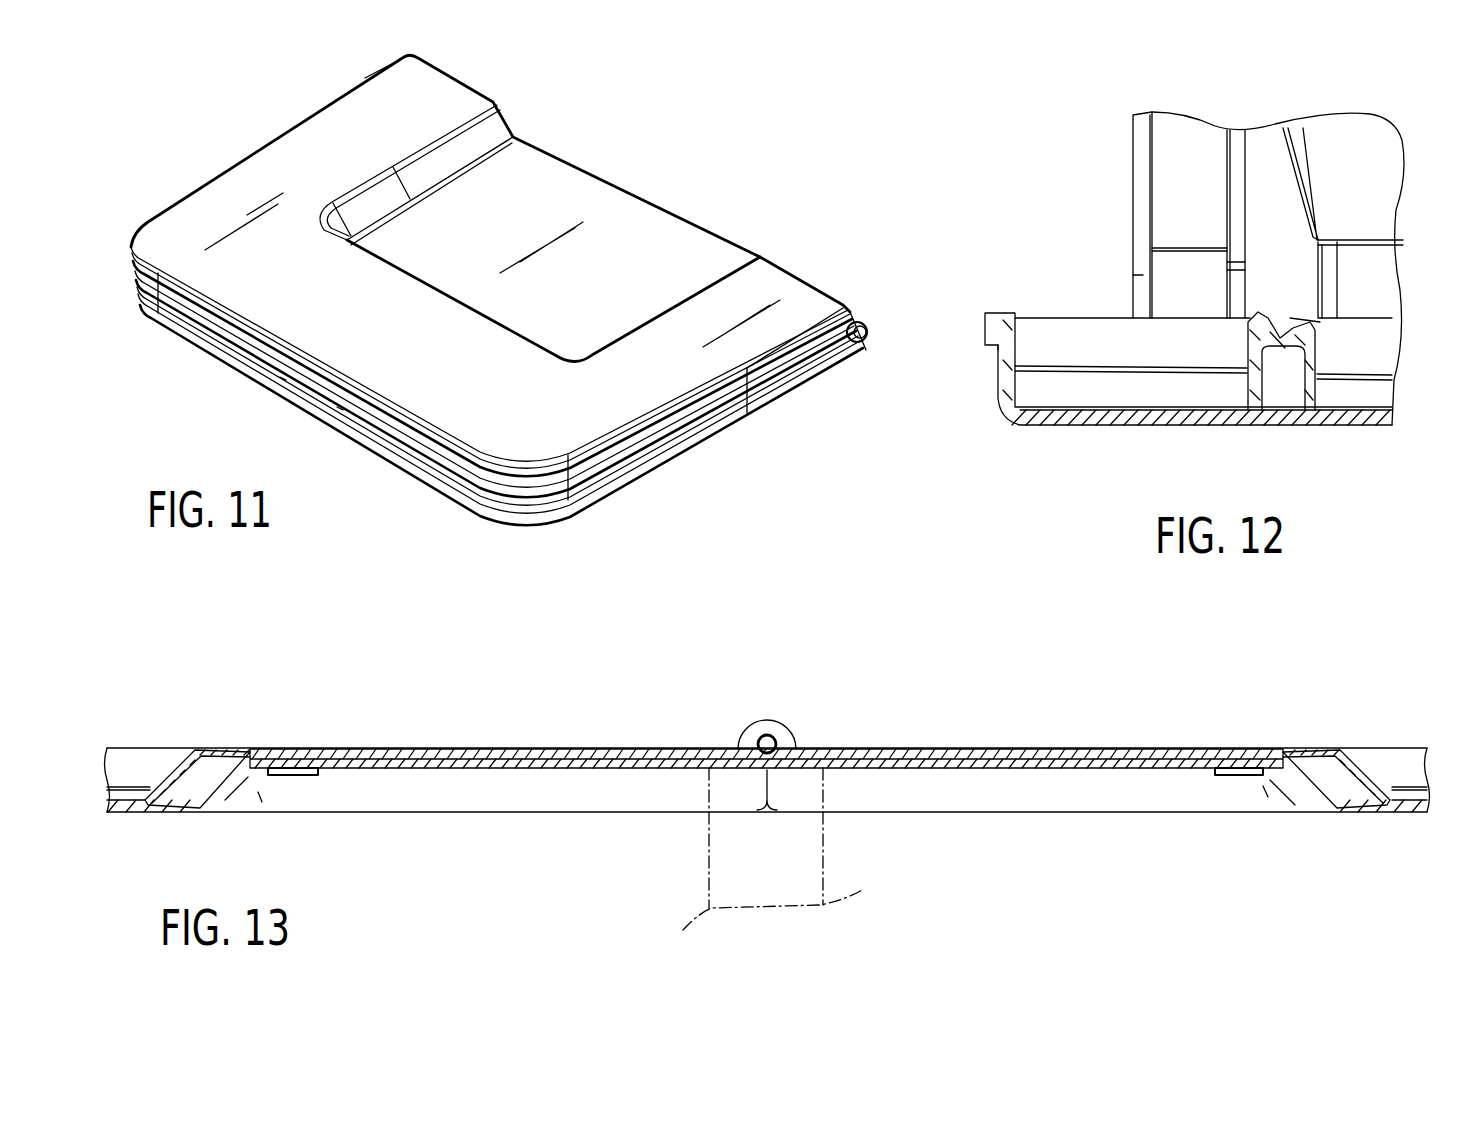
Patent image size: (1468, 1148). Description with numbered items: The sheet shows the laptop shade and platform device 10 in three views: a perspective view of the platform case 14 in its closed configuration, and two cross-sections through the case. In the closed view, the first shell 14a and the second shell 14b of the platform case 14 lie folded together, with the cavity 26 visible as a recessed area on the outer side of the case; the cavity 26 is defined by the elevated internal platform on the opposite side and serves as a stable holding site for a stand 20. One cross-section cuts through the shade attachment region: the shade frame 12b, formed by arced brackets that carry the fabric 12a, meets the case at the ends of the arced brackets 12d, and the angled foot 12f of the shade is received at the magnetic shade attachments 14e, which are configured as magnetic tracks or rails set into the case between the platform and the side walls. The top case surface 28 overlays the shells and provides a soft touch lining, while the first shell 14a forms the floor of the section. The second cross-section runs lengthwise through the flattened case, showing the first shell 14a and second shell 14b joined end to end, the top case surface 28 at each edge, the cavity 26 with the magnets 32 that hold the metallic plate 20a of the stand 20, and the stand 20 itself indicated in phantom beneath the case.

In FIG. 11, the laptop shade and platform device 10 is at (163, 140).
In FIG. 12, the laptop shade and platform device 10 is at (1021, 133).
In FIG. 13, the laptop shade and platform device 10 is at (321, 706).
In FIG. 12, the fabric 12a is at (1343, 133).
In FIG. 12, the shade frame 12b is at (1232, 167).
In FIG. 12, the ends of the arced brackets 12d is at (1227, 292).
In FIG. 12, the angled foot 12f is at (1300, 317).
In FIG. 11, the platform case 14 is at (799, 399).
In FIG. 12, the platform case 14 is at (1234, 434).
In FIG. 13, the platform case 14 is at (1099, 819).
In FIG. 11, the first shell 14a is at (180, 333).
In FIG. 12, the first shell 14a is at (1185, 427).
In FIG. 13, the first shell 14a is at (492, 812).
In FIG. 11, the second shell 14b is at (777, 278).
In FIG. 13, the second shell 14b is at (1283, 813).
In FIG. 12, the magnetic shade attachments 14e is at (1247, 337).
In FIG. 13, the stand 20 is at (684, 889).
In FIG. 13, the metallic plate 20a is at (945, 772).
In FIG. 11, the cavity 26 is at (607, 210).
In FIG. 13, the cavity 26 is at (577, 786).
In FIG. 12, the top case surface 28 is at (1093, 403).
In FIG. 13, the top case surface 28 is at (172, 770).
In FIG. 13, the magnets 32 is at (302, 777).